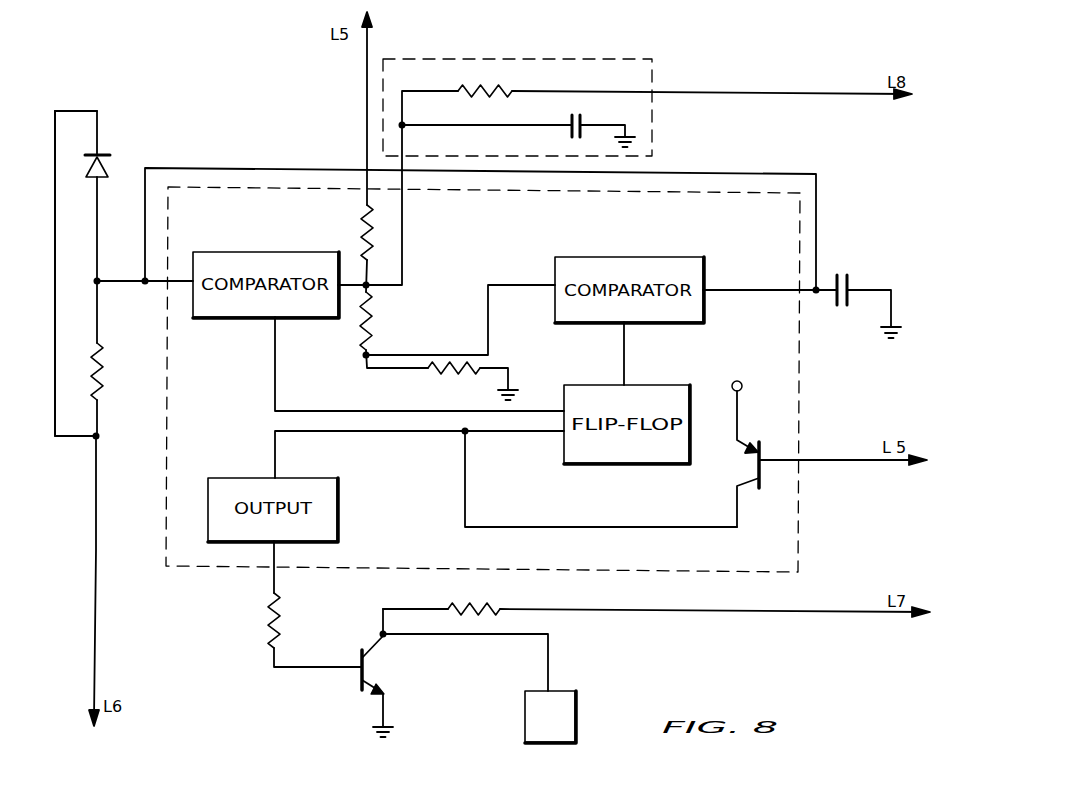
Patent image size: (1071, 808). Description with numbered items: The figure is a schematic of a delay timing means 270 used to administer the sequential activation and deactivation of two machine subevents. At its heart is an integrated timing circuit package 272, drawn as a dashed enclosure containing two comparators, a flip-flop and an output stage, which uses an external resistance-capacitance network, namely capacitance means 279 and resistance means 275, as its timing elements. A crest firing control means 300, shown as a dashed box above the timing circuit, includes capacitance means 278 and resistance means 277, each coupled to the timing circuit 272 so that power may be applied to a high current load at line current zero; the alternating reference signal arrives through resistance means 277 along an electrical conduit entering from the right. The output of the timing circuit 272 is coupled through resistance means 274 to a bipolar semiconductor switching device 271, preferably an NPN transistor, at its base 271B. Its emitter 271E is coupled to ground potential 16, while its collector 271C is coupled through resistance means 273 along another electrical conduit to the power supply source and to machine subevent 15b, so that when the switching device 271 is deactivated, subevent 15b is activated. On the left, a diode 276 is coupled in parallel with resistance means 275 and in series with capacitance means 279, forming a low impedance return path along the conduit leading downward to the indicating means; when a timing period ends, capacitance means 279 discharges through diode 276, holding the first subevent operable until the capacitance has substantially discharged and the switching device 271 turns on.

The delay timing means 270 is at (112, 96).
The diode 276 is at (108, 170).
The resistance means 275 is at (104, 372).
The resistance means 277 is at (500, 90).
The capacitance means 278 is at (572, 125).
The ground potential 16 is at (630, 137).
The crest firing control means 300 is at (652, 60).
The capacitance means 279 is at (849, 281).
The integrated timing circuit package 272 is at (800, 560).
The resistance means 274 is at (268, 615).
The resistance means 273 is at (489, 612).
The bipolar semiconductor switching device 271 is at (381, 664).
The base 271B is at (334, 667).
The collector 271C is at (373, 649).
The emitter 271E is at (386, 697).
The machine subevent 15b is at (550, 717).